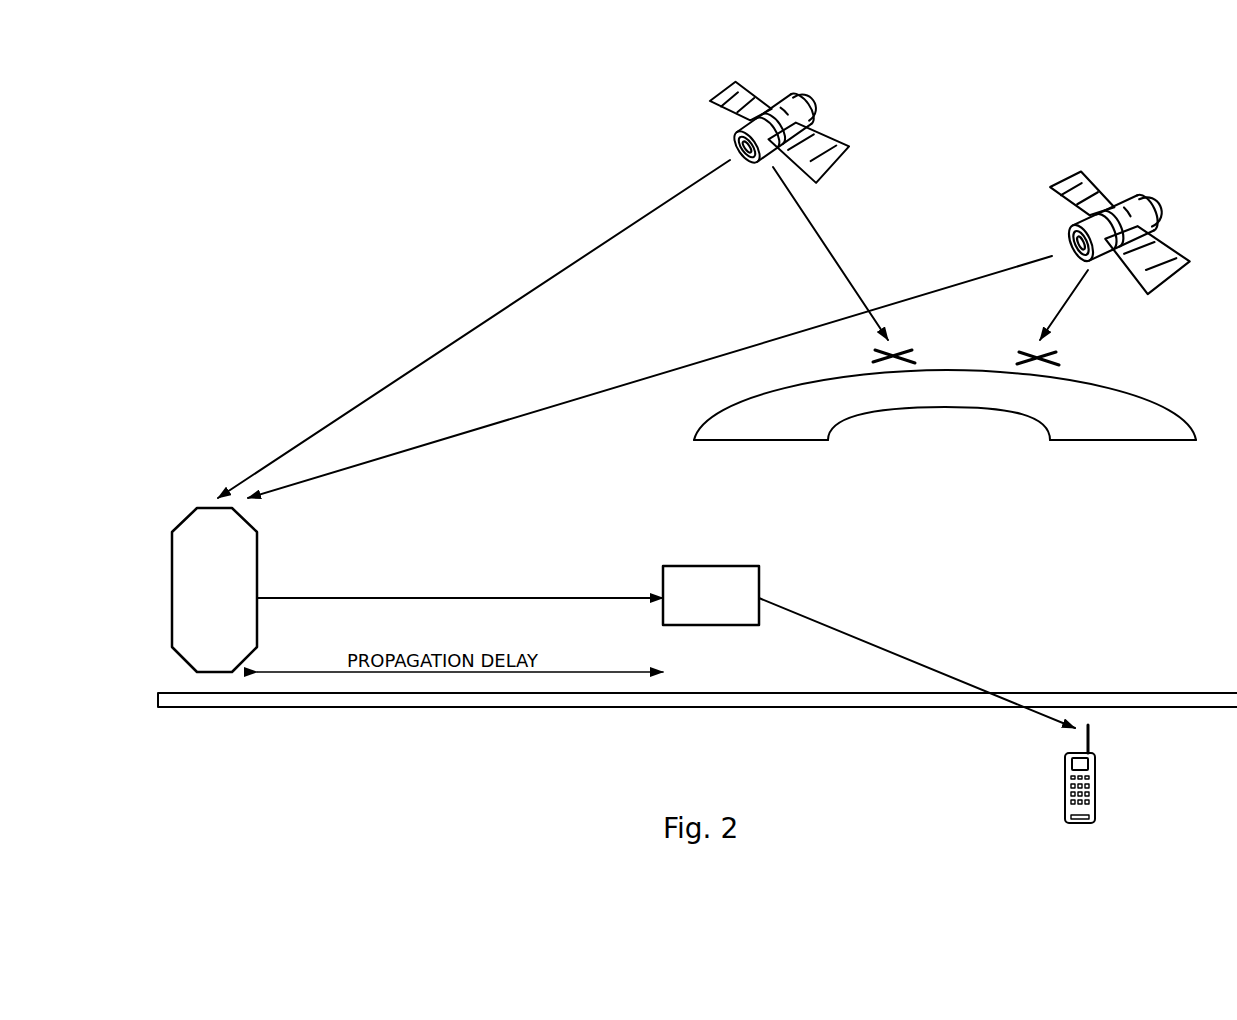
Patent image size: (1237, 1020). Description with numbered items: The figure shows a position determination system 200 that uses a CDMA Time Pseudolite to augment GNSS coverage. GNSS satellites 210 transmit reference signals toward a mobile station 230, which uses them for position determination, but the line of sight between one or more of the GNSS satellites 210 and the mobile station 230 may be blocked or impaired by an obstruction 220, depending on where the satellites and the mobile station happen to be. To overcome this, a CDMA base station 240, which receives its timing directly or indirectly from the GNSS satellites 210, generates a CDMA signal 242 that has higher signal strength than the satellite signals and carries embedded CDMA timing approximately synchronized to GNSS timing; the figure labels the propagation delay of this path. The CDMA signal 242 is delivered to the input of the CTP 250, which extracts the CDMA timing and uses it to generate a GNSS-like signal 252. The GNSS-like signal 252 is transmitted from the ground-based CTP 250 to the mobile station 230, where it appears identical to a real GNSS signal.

The position determination system 200 is at (997, 89).
The GNSS satellites 210 is at (740, 129).
The obstruction 220 is at (1139, 376).
The mobile station 230 is at (1095, 795).
The CDMA base station 240 is at (257, 630).
The CDMA signal 242 is at (496, 579).
The CDMA Time Pseudolite (CTP) 250 is at (690, 566).
The GNSS-like signal 252 is at (896, 631).